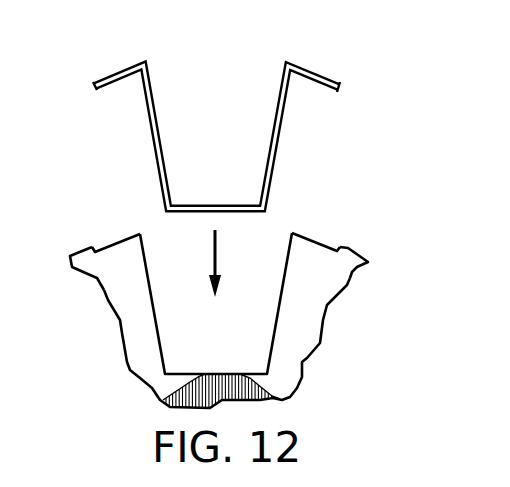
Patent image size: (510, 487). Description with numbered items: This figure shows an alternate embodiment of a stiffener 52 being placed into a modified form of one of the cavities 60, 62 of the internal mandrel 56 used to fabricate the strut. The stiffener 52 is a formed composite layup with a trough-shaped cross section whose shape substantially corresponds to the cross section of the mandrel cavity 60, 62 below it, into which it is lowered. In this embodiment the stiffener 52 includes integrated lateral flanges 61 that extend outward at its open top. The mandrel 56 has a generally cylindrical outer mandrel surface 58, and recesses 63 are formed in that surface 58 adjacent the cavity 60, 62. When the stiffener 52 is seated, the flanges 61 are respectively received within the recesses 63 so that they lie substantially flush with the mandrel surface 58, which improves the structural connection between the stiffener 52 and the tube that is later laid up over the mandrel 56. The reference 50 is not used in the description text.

The cup-shaped member 50 is at (226, 114).
The stiffener 52 is at (226, 114).
The integrated lateral flange 61 is at (117, 72).
The internal mandrel 56 is at (216, 303).
The outer mandrel surface 58 is at (80, 249).
The recess 63 is at (112, 243).
The mandrel cavity 60 is at (221, 361).
The mandrel cavity 62 is at (212, 373).